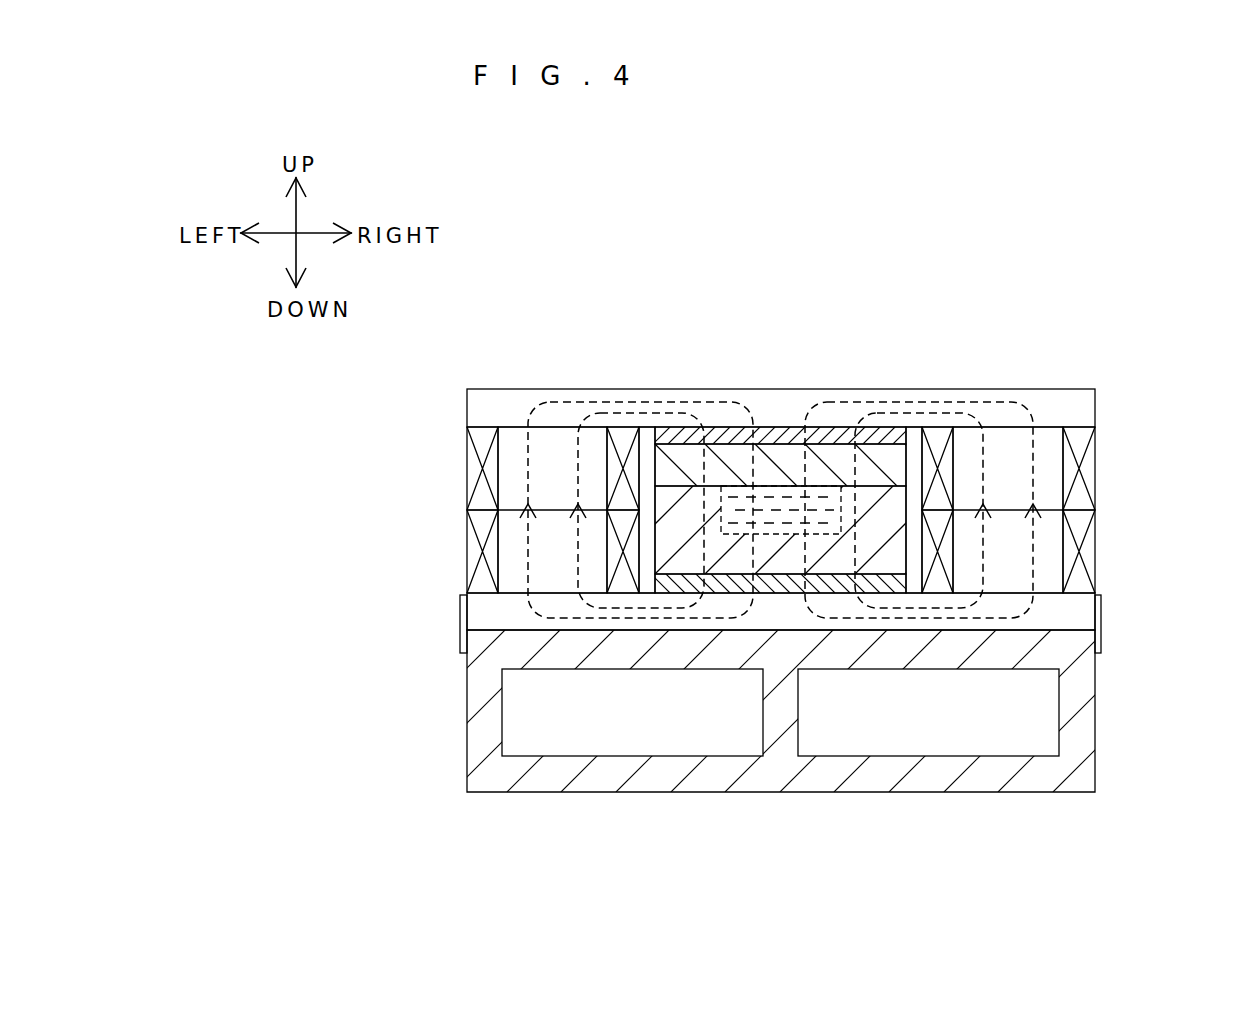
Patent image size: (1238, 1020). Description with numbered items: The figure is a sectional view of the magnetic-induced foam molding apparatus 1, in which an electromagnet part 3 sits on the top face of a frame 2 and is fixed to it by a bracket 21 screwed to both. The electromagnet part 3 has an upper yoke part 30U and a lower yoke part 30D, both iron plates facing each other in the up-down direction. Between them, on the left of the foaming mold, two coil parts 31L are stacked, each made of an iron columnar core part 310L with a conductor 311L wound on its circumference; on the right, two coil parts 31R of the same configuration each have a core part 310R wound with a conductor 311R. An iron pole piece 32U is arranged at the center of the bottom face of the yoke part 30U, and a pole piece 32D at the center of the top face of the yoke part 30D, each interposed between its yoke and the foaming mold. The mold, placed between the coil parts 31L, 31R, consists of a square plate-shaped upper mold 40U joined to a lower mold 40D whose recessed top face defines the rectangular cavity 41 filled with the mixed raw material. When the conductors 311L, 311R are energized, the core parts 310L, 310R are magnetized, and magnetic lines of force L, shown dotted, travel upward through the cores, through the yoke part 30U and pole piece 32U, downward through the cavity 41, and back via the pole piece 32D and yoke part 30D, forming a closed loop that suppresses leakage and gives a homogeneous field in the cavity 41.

The magnetic-induced foam molding apparatus 1 is at (1108, 318).
The frame 2 is at (947, 778).
The bracket 21 is at (1097, 637).
The electromagnet part 3 is at (555, 382).
The yoke part 30U is at (1082, 403).
The yoke part 30D is at (1070, 612).
The core part 310L is at (515, 458).
The core part 310R is at (1047, 457).
The conductor 311L is at (475, 448).
The conductor 311R is at (1090, 447).
The coil part 31L is at (465, 495).
The coil part 31R is at (1095, 495).
The pole piece 32U is at (733, 435).
The pole piece 32D is at (724, 582).
The upper mold 40U is at (830, 460).
The lower mold 40D is at (835, 565).
The cavity 41 is at (796, 488).
The magnetic lines of force L is at (995, 400).